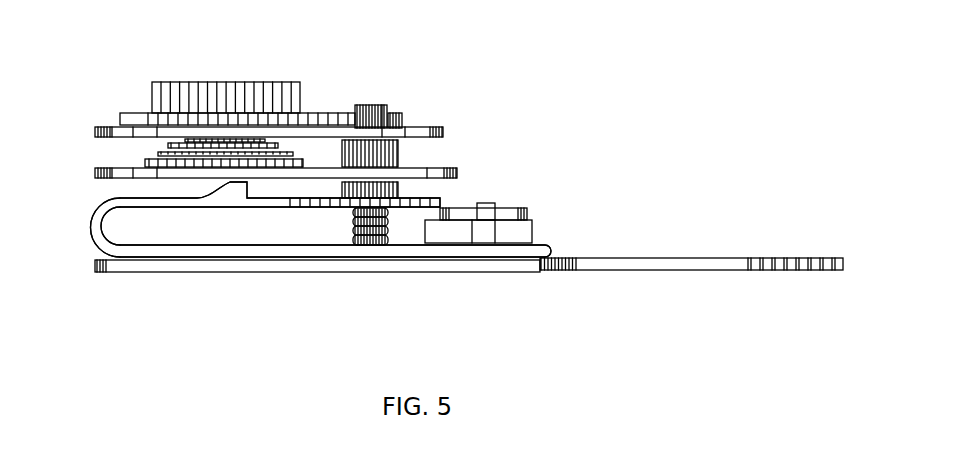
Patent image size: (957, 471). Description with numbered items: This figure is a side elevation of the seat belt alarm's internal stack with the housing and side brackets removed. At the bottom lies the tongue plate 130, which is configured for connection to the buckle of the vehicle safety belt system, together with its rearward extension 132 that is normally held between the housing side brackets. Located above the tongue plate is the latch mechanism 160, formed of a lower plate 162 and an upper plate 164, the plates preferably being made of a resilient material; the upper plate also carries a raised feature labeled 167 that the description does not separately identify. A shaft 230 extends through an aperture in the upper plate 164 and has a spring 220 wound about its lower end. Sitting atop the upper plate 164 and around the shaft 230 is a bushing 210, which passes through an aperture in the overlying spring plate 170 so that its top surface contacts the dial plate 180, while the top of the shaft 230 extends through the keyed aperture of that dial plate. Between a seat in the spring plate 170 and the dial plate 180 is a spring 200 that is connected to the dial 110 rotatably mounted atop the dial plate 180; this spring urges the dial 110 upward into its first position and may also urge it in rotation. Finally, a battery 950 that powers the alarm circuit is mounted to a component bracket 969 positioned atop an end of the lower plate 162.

The dial 110 is at (283, 81).
The shaft 230 is at (378, 104).
The dial plate 180 is at (443, 128).
The bushing 210 is at (398, 155).
The spring plate 170 is at (458, 173).
The spring 200 is at (160, 153).
The latch mechanism 160 is at (89, 265).
The upper plate 164 is at (107, 196).
The raised portion of spring arm 167 is at (252, 190).
The lower plate 162 is at (170, 243).
The spring 220 is at (390, 238).
The battery 950 is at (528, 210).
The component bracket 969 is at (532, 227).
The rearward extension 132 is at (238, 273).
The tongue plate 130 is at (765, 273).